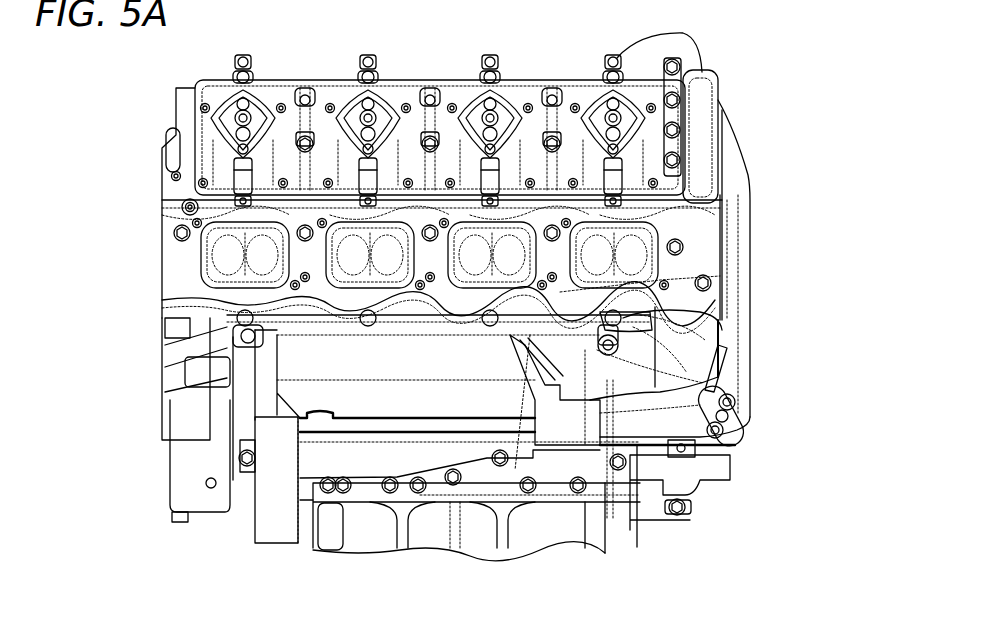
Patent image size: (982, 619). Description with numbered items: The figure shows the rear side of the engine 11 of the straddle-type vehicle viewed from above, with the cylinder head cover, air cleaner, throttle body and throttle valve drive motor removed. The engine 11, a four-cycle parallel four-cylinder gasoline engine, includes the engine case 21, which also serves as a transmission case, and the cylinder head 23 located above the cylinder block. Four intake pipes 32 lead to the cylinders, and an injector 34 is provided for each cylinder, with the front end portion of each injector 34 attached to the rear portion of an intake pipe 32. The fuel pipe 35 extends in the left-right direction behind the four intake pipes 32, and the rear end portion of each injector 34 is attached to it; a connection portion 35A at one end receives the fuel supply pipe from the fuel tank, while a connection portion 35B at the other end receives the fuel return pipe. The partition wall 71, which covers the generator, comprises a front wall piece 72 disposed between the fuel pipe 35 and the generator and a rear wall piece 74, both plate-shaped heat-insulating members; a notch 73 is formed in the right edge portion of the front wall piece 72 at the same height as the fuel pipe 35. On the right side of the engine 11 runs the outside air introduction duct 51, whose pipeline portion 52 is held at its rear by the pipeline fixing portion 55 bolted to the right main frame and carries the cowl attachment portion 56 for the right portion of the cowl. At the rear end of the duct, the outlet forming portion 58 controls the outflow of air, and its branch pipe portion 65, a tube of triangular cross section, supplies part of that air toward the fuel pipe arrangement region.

The engine 11 is at (157, 106).
The engine case 21 is at (277, 525).
The cylinder head 23 is at (180, 207).
The intake pipe 32 is at (350, 226).
The injector 34 is at (215, 295).
The fuel pipe 35 is at (353, 368).
The connection portion 35A is at (668, 328).
The connection portion 35B is at (228, 336).
The outside air introduction duct 51 is at (750, 178).
The pipeline portion 52 is at (733, 209).
The pipeline fixing portion 55 is at (710, 380).
The cowl attachment portion 56 is at (737, 410).
The outlet forming portion 58 is at (552, 433).
The branch pipe portion 65 is at (605, 540).
The partition wall 71 is at (266, 485).
The front wall piece 72 is at (333, 328).
The notch 73 is at (515, 470).
The rear wall piece 74 is at (347, 457).